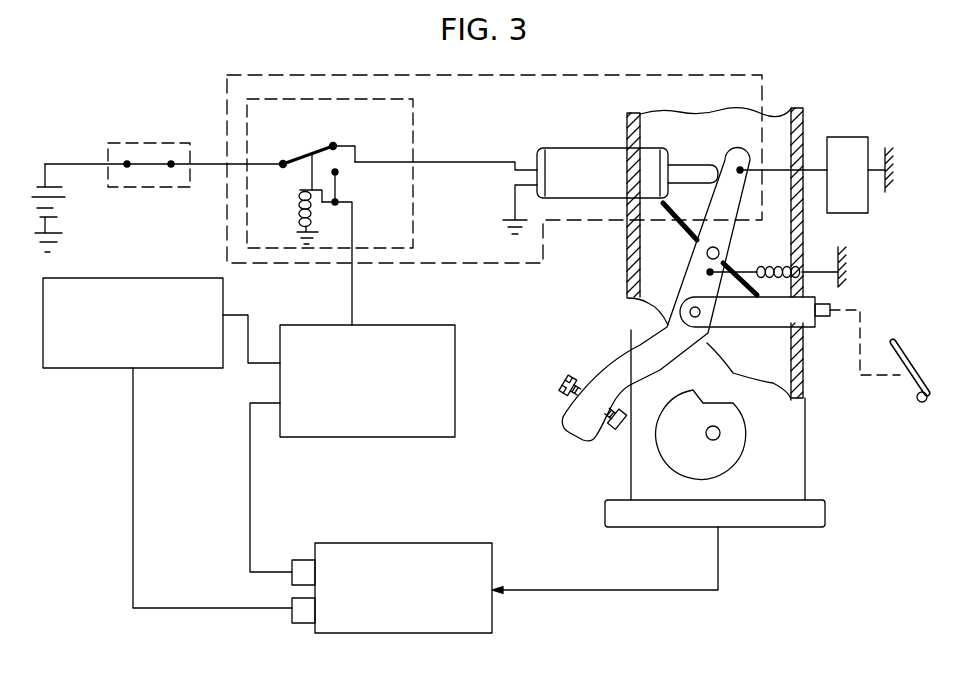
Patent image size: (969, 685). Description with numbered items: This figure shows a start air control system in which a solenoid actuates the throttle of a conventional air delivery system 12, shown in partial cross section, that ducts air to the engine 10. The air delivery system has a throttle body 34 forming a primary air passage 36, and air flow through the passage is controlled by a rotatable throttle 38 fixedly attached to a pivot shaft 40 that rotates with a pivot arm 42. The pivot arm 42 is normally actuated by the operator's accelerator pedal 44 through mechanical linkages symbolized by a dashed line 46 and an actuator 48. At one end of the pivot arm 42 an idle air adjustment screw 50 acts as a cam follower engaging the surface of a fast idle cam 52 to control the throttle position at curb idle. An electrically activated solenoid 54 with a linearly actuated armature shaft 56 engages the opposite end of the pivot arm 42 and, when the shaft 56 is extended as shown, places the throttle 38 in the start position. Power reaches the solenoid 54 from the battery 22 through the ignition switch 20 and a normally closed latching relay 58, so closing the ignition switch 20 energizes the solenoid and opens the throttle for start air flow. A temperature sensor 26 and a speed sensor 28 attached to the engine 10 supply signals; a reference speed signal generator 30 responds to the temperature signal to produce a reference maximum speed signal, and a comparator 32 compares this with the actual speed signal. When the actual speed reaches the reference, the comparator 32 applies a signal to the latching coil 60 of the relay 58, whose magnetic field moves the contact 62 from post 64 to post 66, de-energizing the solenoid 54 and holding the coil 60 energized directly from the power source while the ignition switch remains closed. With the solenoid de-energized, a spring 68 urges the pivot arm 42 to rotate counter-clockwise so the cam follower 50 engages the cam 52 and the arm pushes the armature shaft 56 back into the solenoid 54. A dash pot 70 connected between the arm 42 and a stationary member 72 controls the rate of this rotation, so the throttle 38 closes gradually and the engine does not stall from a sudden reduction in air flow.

The engine 10 is at (411, 543).
The air delivery system 12 is at (812, 453).
The ignition switch 20 is at (150, 142).
The battery 22 is at (55, 212).
The temperature sensor 26 is at (305, 623).
The speed sensor 28 is at (302, 560).
The reference speed signal generator 30 is at (167, 367).
The comparator 32 is at (383, 326).
The throttle body 34 is at (796, 120).
The primary air passage 36 is at (775, 121).
The throttle 38 is at (688, 240).
The pivot shaft 40 is at (719, 252).
The pivot arm 42 is at (620, 356).
The accelerator pedal 44 is at (923, 343).
The dashed line 46 is at (858, 348).
The actuator 48 is at (750, 316).
The idle air adjustment screw 50 is at (563, 397).
The fast idle cam 52 is at (730, 455).
The solenoid 54 is at (598, 165).
The armature shaft 56 is at (692, 173).
The latching relay 58 is at (413, 131).
The latching coil 60 is at (306, 218).
The contact 62 is at (303, 155).
The post 64 is at (335, 145).
The post 66 is at (338, 174).
The spring 68 is at (777, 267).
The dash pot 70 is at (858, 145).
The stationary member 72 is at (888, 186).